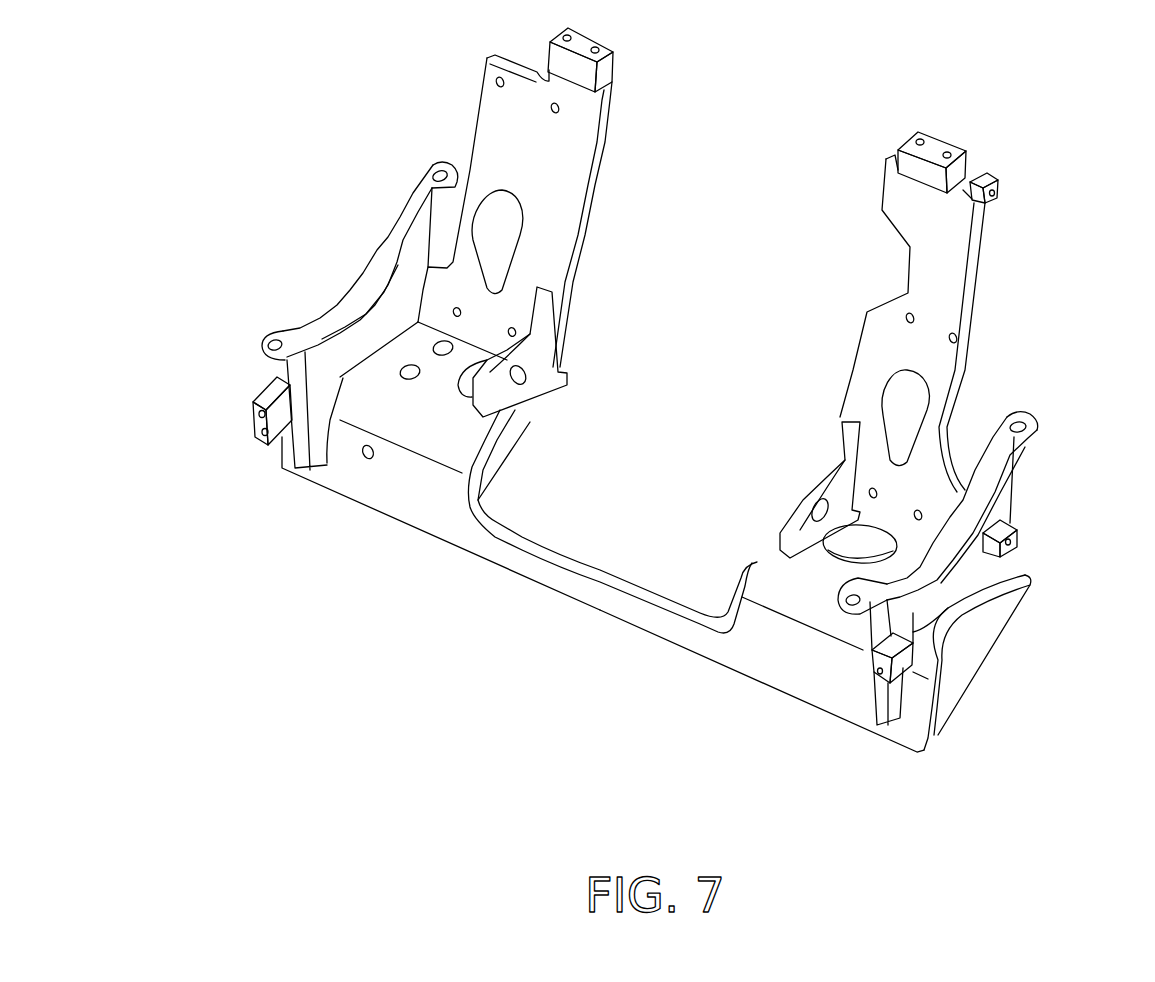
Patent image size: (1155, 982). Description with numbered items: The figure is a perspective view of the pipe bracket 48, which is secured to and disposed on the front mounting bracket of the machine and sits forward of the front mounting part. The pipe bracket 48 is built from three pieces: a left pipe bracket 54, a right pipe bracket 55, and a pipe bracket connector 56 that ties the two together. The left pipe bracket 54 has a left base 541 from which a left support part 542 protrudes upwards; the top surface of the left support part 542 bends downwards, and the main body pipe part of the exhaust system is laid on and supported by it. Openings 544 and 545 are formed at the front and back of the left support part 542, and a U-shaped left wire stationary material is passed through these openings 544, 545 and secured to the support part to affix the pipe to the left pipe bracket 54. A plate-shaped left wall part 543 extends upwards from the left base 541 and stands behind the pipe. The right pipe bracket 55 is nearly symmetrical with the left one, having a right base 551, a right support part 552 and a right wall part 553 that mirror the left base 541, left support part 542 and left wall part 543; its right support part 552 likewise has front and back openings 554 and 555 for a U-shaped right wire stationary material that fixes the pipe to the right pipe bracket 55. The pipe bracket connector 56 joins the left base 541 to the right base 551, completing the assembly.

The pipe bracket 48 is at (666, 390).
The left pipe bracket 54 is at (871, 442).
The left base 541 is at (800, 598).
The left support part 542 is at (1000, 500).
The left wall part 543 is at (903, 202).
The opening 544 is at (838, 579).
The opening 545 is at (1018, 413).
The right pipe bracket 55 is at (441, 319).
The right base 551 is at (427, 437).
The right support part 552 is at (347, 293).
The right wall part 553 is at (568, 134).
The opening 554 is at (270, 338).
The opening 555 is at (443, 167).
The pipe bracket connector 56 is at (570, 580).